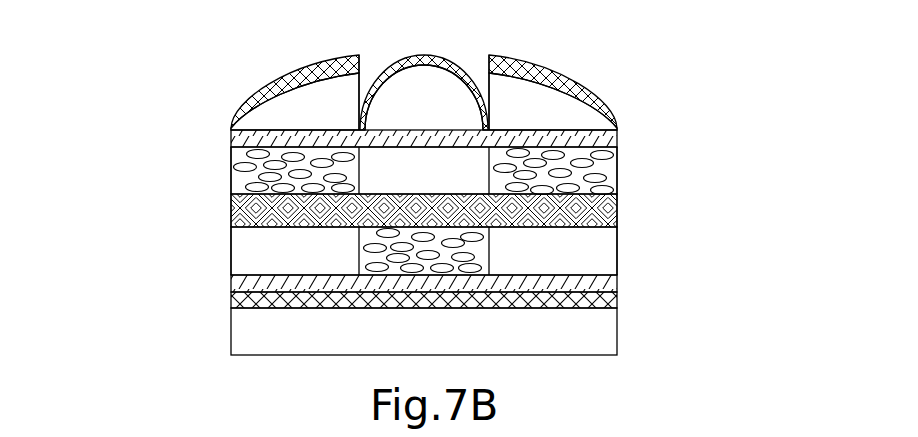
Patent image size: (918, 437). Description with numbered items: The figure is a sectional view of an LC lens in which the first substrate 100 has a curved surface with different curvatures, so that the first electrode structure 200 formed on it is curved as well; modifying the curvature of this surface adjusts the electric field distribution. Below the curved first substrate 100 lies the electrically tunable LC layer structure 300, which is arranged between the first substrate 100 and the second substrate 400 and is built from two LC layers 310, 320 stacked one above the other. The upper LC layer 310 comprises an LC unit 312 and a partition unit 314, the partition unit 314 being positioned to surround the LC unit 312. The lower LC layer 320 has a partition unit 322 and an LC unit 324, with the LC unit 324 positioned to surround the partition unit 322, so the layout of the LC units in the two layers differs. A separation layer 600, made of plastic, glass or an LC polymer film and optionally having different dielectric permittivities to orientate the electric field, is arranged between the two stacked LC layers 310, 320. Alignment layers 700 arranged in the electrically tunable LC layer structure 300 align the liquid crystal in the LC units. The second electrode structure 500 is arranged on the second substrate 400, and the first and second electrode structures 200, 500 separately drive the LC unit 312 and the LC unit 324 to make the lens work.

The first substrate 100 is at (257, 112).
The first electrode structure 200 is at (318, 62).
The electrically tunable LC layer structure 300 is at (123, 147).
The LC layer 310 is at (430, 171).
The LC unit 312 is at (446, 183).
The partition unit 314 is at (617, 168).
The LC layer 320 is at (371, 314).
The partition unit 322 is at (375, 270).
The LC unit 324 is at (328, 266).
The second substrate 400 is at (617, 347).
The second electrode structure 500 is at (617, 303).
The separation layer 600 is at (617, 208).
The alignment layer 700 is at (617, 140).